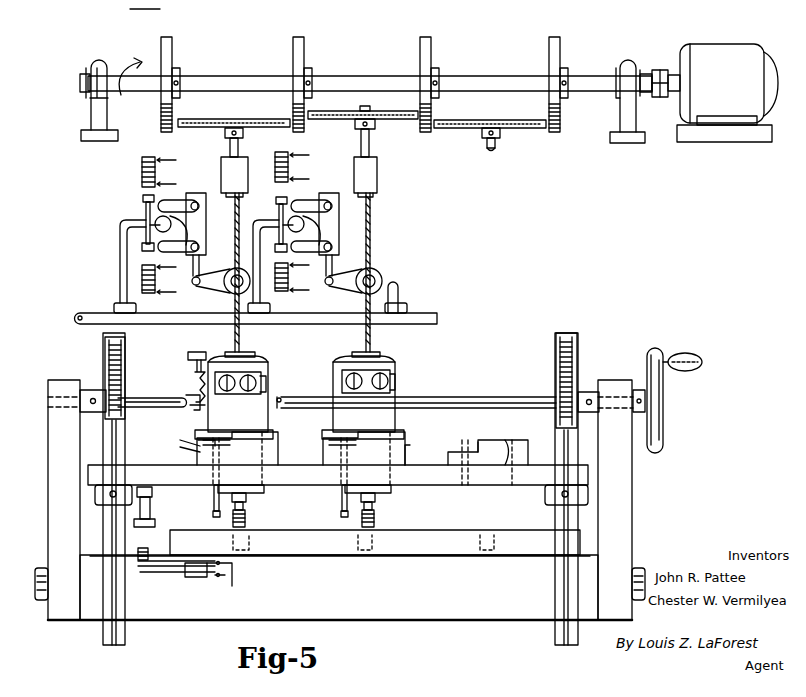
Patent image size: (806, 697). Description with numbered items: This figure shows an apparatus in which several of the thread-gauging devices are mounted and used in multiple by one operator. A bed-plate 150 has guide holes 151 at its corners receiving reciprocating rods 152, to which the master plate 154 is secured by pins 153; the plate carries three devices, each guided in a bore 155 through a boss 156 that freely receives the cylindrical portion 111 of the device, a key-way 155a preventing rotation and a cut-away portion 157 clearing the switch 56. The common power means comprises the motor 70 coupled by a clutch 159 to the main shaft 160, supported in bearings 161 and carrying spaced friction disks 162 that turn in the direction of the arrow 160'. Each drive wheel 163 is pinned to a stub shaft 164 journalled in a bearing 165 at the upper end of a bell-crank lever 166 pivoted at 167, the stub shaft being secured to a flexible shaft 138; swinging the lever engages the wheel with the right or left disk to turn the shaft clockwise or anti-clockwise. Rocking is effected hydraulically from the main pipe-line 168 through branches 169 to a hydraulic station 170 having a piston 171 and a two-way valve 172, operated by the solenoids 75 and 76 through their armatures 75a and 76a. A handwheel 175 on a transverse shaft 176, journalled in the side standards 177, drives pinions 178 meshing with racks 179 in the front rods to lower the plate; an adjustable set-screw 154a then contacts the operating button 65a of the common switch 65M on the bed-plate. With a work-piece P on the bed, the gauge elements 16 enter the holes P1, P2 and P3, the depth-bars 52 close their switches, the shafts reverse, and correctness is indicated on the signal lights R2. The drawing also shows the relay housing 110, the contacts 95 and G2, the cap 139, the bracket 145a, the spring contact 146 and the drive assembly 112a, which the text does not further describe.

The main shaft 160 is at (370, 63).
The drive assembly 112a is at (139, 5).
The arrow 160' is at (131, 69).
The bearings 161 is at (92, 108).
The disks or frictional pulleys 162 is at (168, 36).
The drive wheel 163 is at (268, 110).
The stub shaft 164 is at (230, 144).
The bearing 165 is at (222, 166).
The clutch 159 is at (661, 70).
The motor 70 is at (723, 93).
The solenoid 76 is at (141, 168).
The armature 76a is at (144, 195).
The armature 75a is at (141, 248).
The piston 171 is at (198, 192).
The hydraulic station 170 is at (122, 213).
The two-way valve 172 is at (146, 227).
The solenoid 75 is at (156, 282).
The branches 169 is at (116, 302).
The bell-crank lever 166 is at (216, 295).
The pivot 167 is at (380, 295).
The flexible shaft 138 is at (400, 290).
The main pipe-line 168 is at (432, 324).
The side standards 177 is at (60, 454).
The bed-plate 150 is at (340, 587).
The guide holes 151 is at (120, 605).
The reciprocating rods 152 is at (125, 630).
The racks 179 is at (108, 352).
The pinions 178 is at (106, 392).
The transverse shaft 176 is at (139, 398).
The handwheel 175 is at (660, 428).
The relay housing 110 is at (272, 422).
The signal light R2 is at (227, 372).
The relay contact 95 is at (252, 375).
The contact G2 is at (258, 380).
The cap 139 is at (348, 358).
The bracket 145a is at (198, 352).
The spring contact 146 is at (188, 382).
The boss 156 is at (279, 455).
The switch 56 is at (230, 443).
The pins 153 is at (126, 478).
The master plate 154 is at (306, 488).
The adjustable set-screw 154a is at (168, 514).
The depth-bar 52 is at (214, 502).
The gauge element 16 is at (246, 518).
The cylindrical portion 111 is at (392, 491).
The work-piece P is at (485, 528).
The hole P1 is at (245, 552).
The hole P2 is at (362, 552).
The hole P3 is at (486, 552).
The bore 155 is at (408, 447).
The key-way 155a is at (462, 486).
The cut-away portion 157 is at (466, 442).
The operating button 65a is at (150, 556).
The switch 65M is at (172, 583).